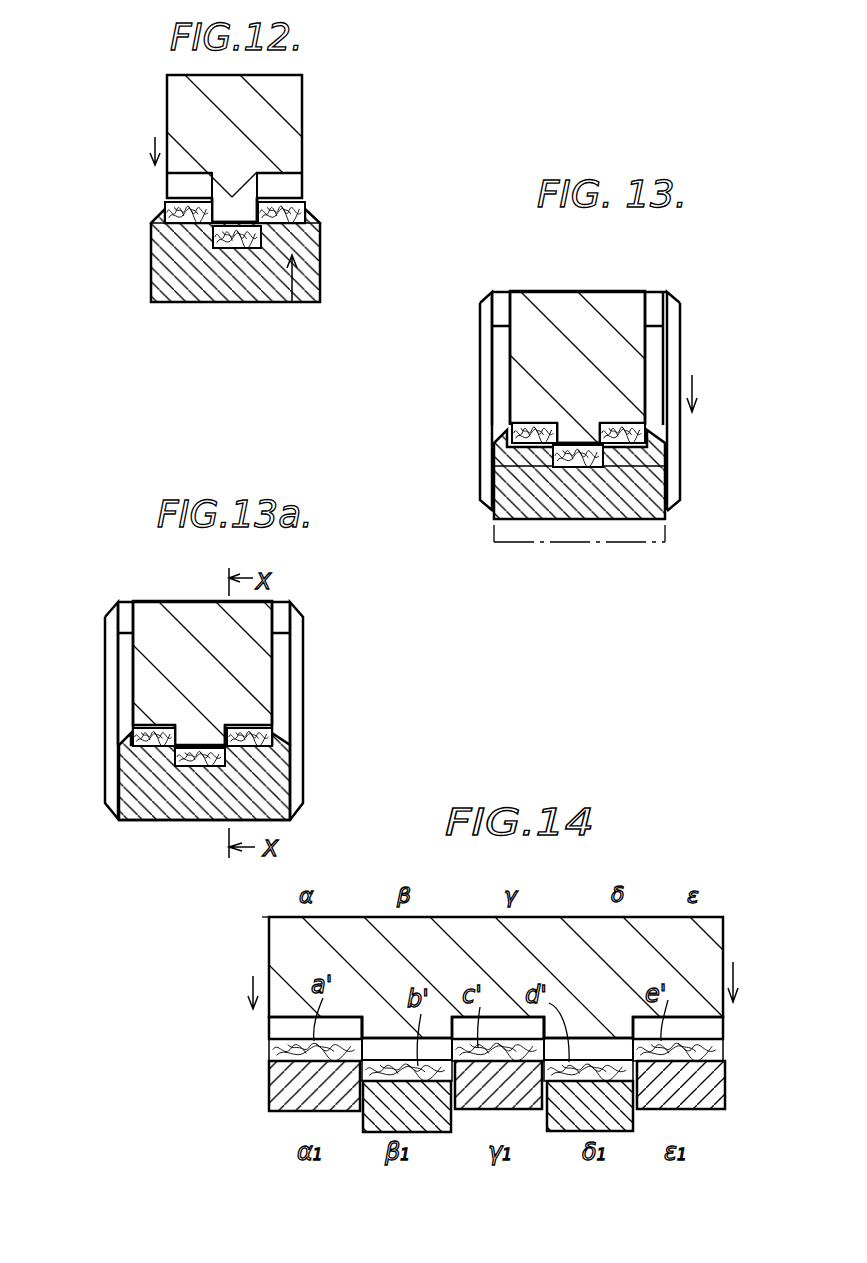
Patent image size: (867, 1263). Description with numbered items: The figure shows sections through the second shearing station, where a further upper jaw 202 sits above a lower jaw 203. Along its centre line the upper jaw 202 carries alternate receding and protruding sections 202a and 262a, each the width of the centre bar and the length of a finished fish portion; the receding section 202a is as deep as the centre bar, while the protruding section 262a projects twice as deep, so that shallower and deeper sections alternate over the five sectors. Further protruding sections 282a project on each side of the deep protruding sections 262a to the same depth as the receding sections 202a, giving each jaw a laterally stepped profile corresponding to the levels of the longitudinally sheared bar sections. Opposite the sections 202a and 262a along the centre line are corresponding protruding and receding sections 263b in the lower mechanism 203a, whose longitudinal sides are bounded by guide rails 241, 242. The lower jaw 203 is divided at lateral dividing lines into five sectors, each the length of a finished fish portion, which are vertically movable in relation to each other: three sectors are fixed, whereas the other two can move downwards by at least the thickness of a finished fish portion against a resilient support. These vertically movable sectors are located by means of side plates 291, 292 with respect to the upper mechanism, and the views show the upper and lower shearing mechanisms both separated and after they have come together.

In FIG. 12, the upper jaw 202 is at (288, 112).
In FIG. 13, the upper jaw 202 is at (610, 297).
In FIG. 13a, the upper jaw 202 is at (202, 674).
In FIG. 14, the receding section 202a is at (281, 1021).
In FIG. 12, the lower jaw 203 is at (190, 287).
In FIG. 12, the lower mechanism 203a is at (297, 237).
In FIG. 12, the guide rail 241 is at (310, 218).
In FIG. 12, the guide rail 242 is at (153, 218).
In FIG. 12, the protruding section 262a is at (233, 207).
In FIG. 13, the protruding section 262a is at (570, 427).
In FIG. 13a, the protruding section 262a is at (200, 728).
In FIG. 14, the protruding section 262a is at (387, 1043).
In FIG. 12, the protruding and receding sections 263b is at (248, 248).
In FIG. 13, the protruding and receding sections 263b is at (553, 452).
In FIG. 12, the further protruding section 282a is at (289, 183).
In FIG. 13, the further protruding section 282a is at (528, 395).
In FIG. 13a, the further protruding section 282a is at (143, 713).
In FIG. 13, the side plate 291 is at (670, 313).
In FIG. 13, the side plate 292 is at (525, 273).